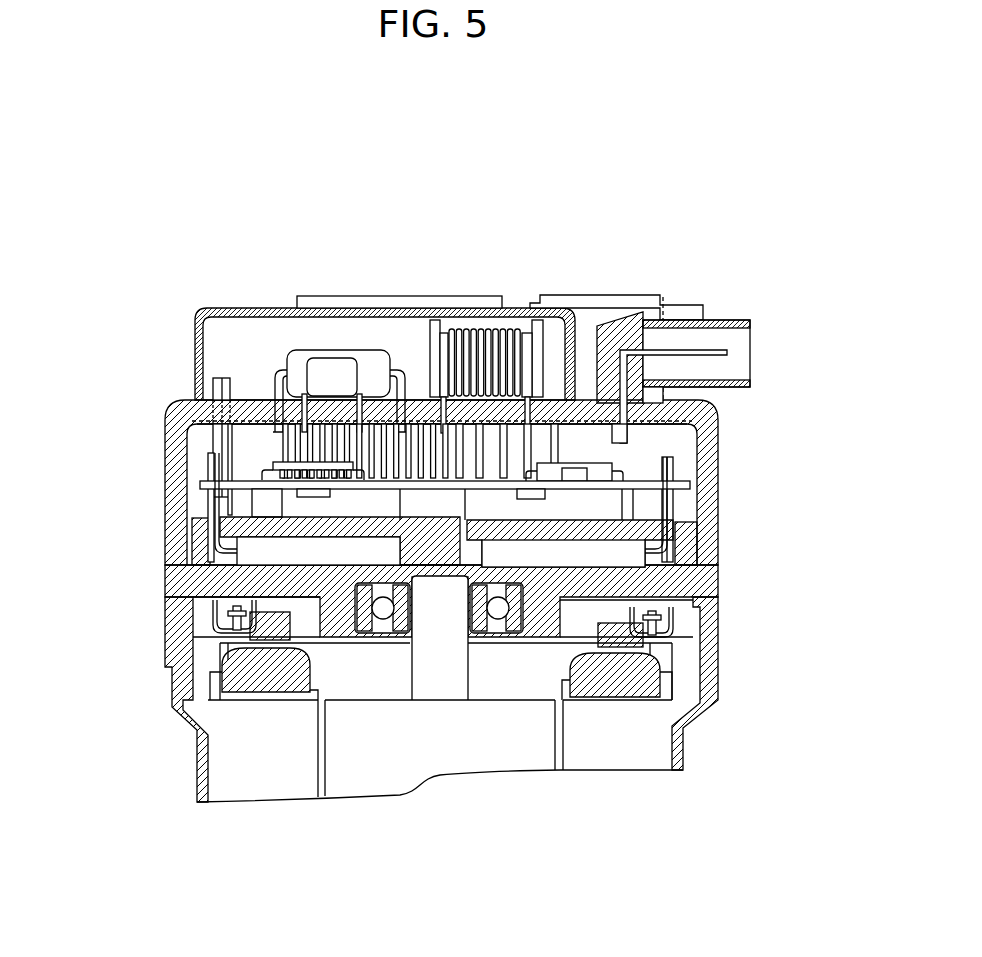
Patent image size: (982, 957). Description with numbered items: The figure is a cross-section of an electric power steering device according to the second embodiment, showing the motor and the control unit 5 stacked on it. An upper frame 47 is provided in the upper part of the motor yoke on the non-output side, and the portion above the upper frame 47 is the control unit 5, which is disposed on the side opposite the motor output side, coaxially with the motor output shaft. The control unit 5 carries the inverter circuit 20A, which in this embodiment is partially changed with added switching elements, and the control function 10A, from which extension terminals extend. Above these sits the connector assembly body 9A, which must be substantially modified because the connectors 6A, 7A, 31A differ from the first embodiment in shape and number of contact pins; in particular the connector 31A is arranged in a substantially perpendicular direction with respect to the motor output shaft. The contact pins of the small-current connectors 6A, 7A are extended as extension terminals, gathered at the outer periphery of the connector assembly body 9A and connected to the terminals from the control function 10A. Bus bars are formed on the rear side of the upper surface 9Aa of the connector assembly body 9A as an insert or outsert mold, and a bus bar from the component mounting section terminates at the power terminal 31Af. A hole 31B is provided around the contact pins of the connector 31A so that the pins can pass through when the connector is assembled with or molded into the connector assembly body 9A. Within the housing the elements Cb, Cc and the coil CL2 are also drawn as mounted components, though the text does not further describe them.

The control unit 5 is at (153, 483).
The connector assembly body 9A is at (163, 455).
The upper surface of the connector assembly body 9Aa is at (190, 398).
The power terminal 31Af is at (200, 375).
The small-current connector 7A is at (333, 297).
The small-current connector 6A is at (590, 296).
The connector 31A is at (707, 340).
The hole 31B is at (612, 437).
The capacitor Cb is at (343, 352).
The capacitor element Cc is at (305, 372).
The coil CL2 is at (497, 328).
The control function 10A is at (690, 483).
The upper frame 47 is at (163, 577).
The inverter circuit 20A is at (197, 582).